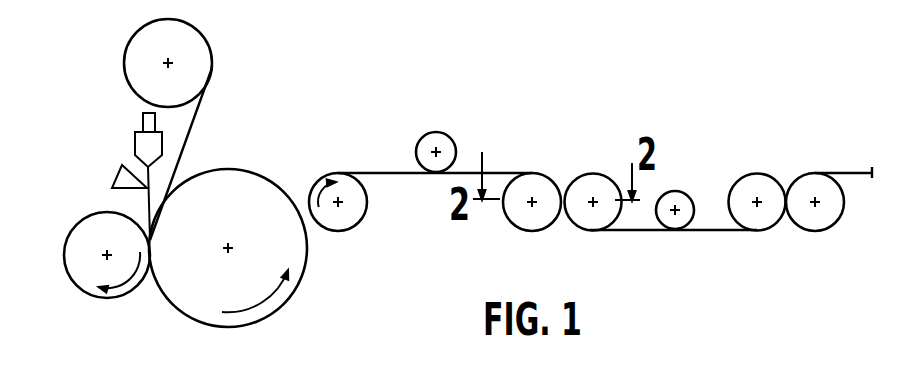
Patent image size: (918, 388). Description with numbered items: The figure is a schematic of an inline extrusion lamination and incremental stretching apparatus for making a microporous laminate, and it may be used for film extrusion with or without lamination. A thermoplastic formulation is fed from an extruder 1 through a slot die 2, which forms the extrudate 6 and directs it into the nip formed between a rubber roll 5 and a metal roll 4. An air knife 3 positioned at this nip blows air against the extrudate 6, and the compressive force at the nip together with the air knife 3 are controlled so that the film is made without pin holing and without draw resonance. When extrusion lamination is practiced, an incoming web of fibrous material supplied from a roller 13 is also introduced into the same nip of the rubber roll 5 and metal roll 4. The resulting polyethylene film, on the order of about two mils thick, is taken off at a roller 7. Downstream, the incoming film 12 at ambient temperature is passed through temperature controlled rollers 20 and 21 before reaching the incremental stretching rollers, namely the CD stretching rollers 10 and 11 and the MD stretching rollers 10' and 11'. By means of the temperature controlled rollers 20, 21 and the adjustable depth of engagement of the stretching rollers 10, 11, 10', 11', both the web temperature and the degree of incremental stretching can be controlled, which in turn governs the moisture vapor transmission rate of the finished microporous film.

The extruder 1 is at (143, 118).
The slot die 2 is at (135, 146).
The air knife 3 is at (120, 168).
The metal roll 4 is at (242, 172).
The rubber roll 5 is at (72, 276).
The extrudate 6 is at (147, 210).
The take-off roller 7 is at (350, 228).
The CD incremental stretching roller 10 is at (523, 218).
The CD incremental stretching roller 11 is at (598, 219).
The MD incremental stretching roller 10' is at (765, 219).
The MD incremental stretching roller 11' is at (831, 218).
The incoming film 12 is at (375, 171).
The roller 13 is at (212, 58).
The temperature controlled roller 20 is at (442, 133).
The temperature controlled roller 21 is at (673, 192).